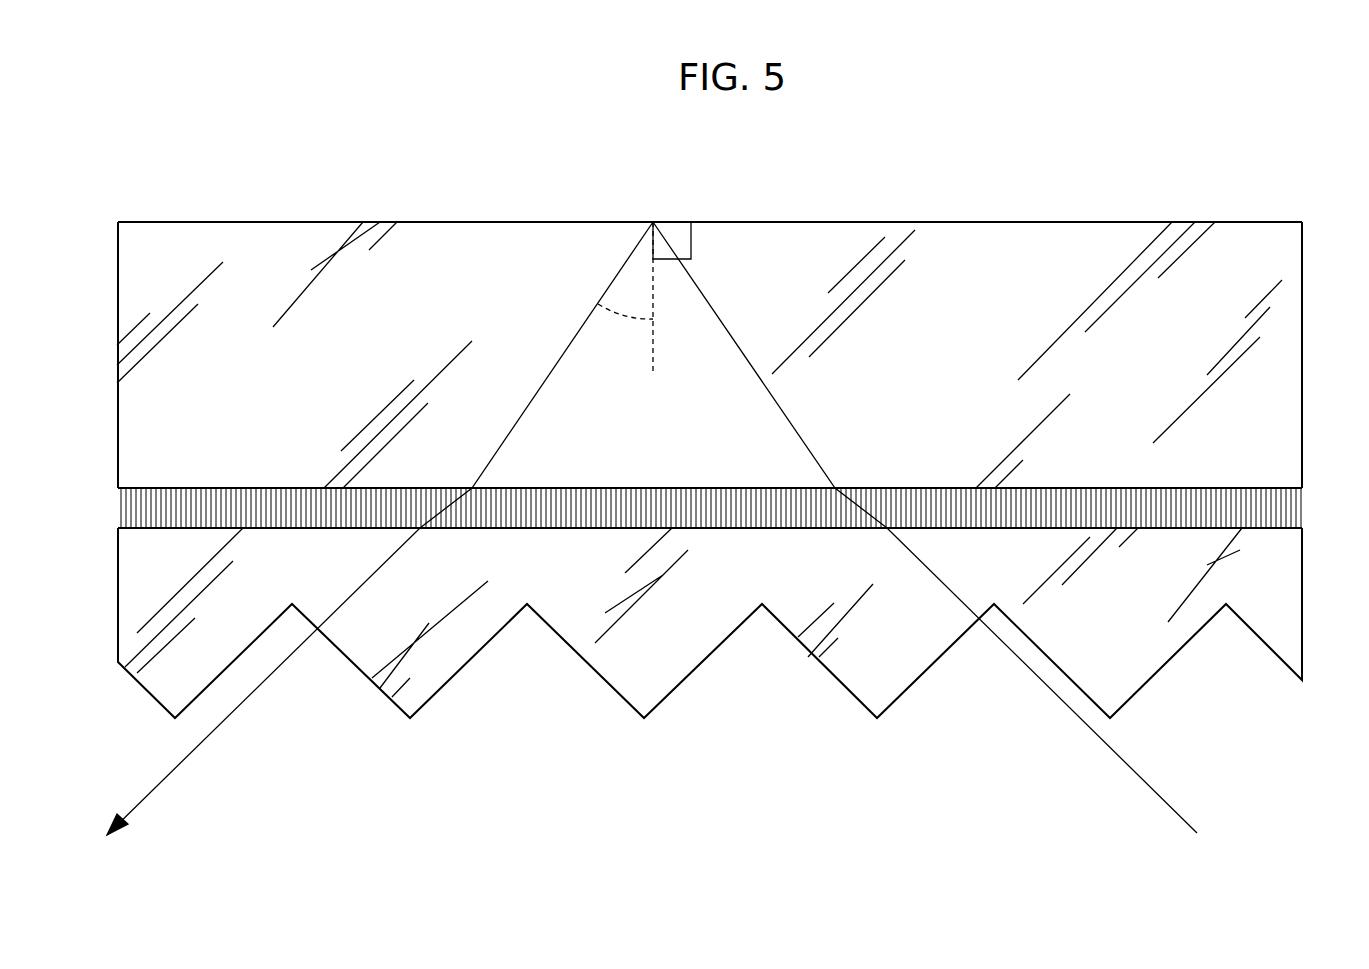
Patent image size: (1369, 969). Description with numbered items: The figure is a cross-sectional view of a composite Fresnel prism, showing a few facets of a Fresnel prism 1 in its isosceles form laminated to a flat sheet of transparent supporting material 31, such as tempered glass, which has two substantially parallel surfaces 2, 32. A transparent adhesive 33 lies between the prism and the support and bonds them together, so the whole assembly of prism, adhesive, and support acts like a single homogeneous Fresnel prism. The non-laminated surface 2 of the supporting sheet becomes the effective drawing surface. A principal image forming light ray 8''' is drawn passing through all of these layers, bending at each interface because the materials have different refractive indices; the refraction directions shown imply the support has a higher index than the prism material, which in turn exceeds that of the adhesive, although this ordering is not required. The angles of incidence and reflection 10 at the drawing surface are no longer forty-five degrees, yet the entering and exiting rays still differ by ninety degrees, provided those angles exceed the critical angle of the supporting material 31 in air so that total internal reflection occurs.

The Fresnel prism 1 is at (1286, 575).
The non-laminated surface 2 is at (848, 222).
The transparent supporting material 31 is at (1272, 360).
The parallel surface 32 is at (1275, 488).
The transparent adhesive 33 is at (1288, 512).
The angles of incidence and reflection 10 is at (632, 325).
The principal image forming light ray 8''' is at (652, 528).